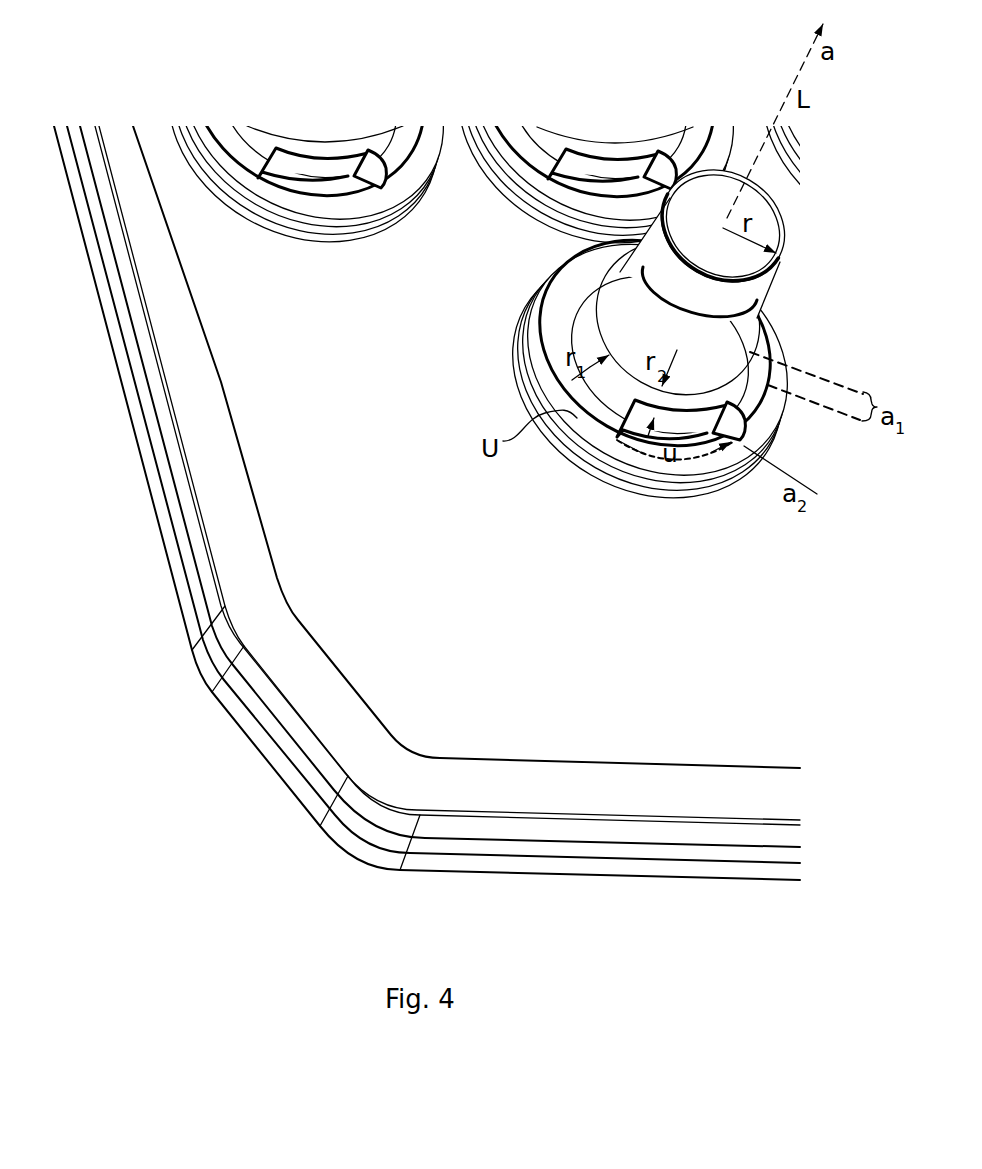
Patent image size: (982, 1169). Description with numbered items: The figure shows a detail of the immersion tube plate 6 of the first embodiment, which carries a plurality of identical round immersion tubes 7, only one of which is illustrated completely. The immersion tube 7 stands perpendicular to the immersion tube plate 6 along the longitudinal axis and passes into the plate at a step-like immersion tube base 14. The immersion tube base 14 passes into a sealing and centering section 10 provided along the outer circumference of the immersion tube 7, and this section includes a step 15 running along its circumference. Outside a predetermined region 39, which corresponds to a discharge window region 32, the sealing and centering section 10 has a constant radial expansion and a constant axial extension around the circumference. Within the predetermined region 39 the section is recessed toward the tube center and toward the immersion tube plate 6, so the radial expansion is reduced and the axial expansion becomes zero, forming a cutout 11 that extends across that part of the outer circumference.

The immersion tube plate 6 is at (152, 763).
The immersion tube 7 is at (634, 293).
The sealing and centering section 10 is at (659, 383).
The cutout 11 is at (674, 484).
The immersion tube base 14 is at (527, 340).
The step 15 is at (751, 430).
The discharge window region 32 is at (654, 483).
The predetermined region 39 is at (651, 447).